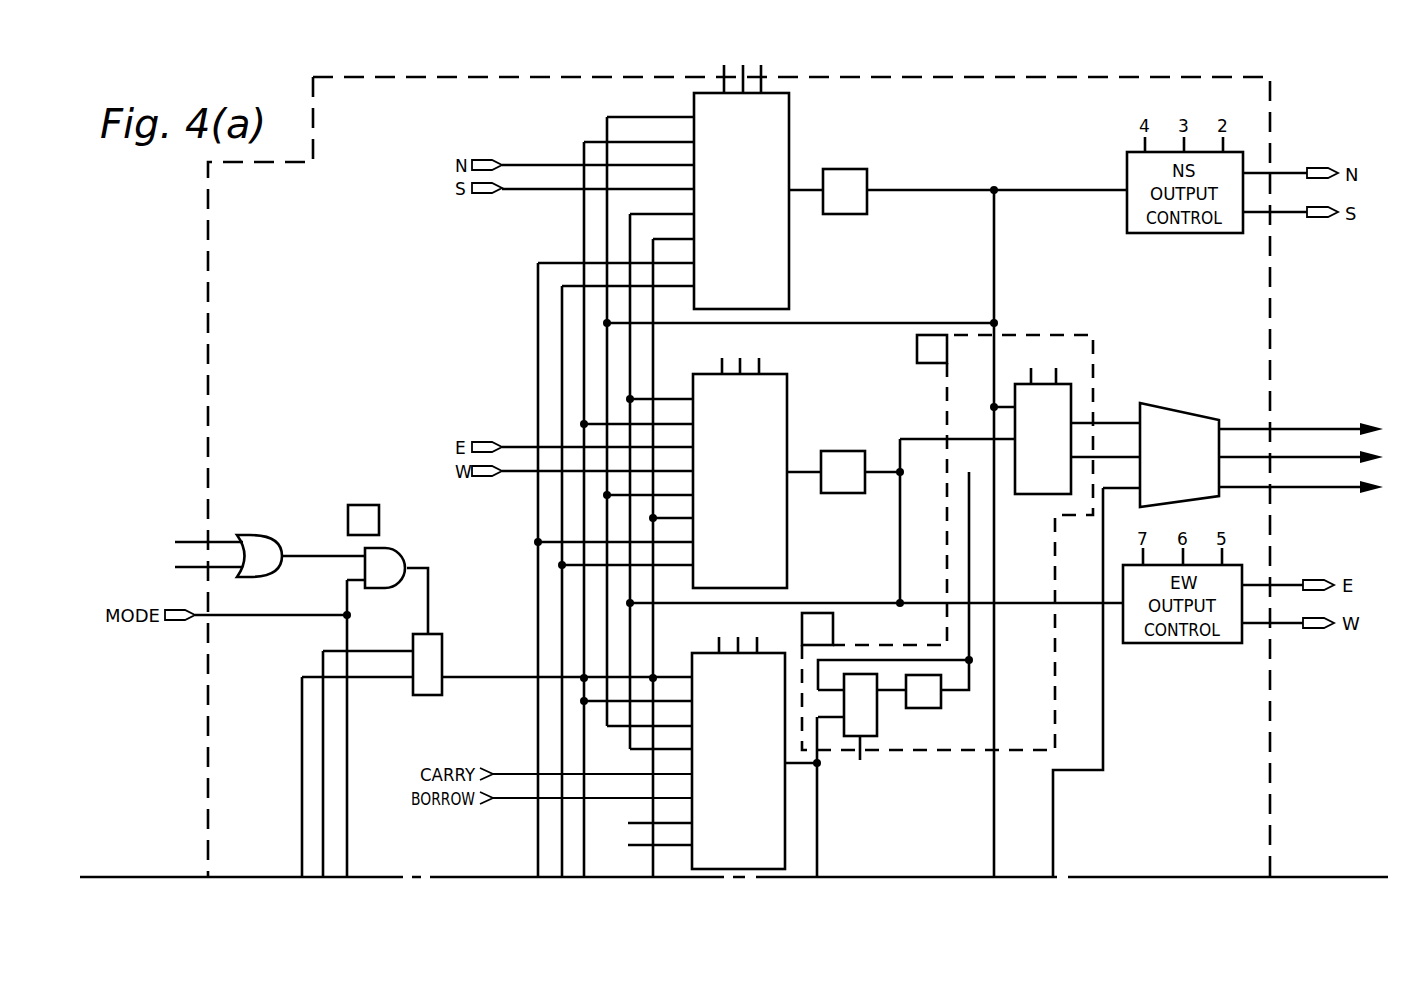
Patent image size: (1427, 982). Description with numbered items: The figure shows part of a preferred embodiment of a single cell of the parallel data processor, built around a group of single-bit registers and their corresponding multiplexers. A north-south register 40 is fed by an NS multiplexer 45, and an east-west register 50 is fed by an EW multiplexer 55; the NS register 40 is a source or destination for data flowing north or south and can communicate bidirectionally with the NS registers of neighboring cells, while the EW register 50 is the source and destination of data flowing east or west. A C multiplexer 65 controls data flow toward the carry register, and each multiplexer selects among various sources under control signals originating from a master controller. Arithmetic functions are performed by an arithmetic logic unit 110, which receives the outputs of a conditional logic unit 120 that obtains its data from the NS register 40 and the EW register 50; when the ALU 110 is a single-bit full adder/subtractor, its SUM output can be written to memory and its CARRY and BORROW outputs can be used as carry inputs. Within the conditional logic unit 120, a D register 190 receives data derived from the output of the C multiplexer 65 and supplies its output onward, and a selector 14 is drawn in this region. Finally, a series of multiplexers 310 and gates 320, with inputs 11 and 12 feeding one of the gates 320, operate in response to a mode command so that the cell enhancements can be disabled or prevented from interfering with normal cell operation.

The NS multiplexer 45 is at (789, 120).
The north-south (NS) register 40 is at (845, 214).
The EW multiplexer 55 is at (787, 403).
The east-west (EW) register 50 is at (843, 493).
The C multiplexer 65 is at (785, 835).
The selector 14 is at (893, 674).
The conditional logic unit (CLU) 120 is at (900, 752).
The D register 190 is at (1033, 494).
The arithmetic logic unit (ALU) 110 is at (1176, 408).
The multiplexers 310 is at (428, 697).
The gates 320 is at (252, 534).
The input signal line 11 is at (195, 542).
The input signal line 12 is at (195, 567).